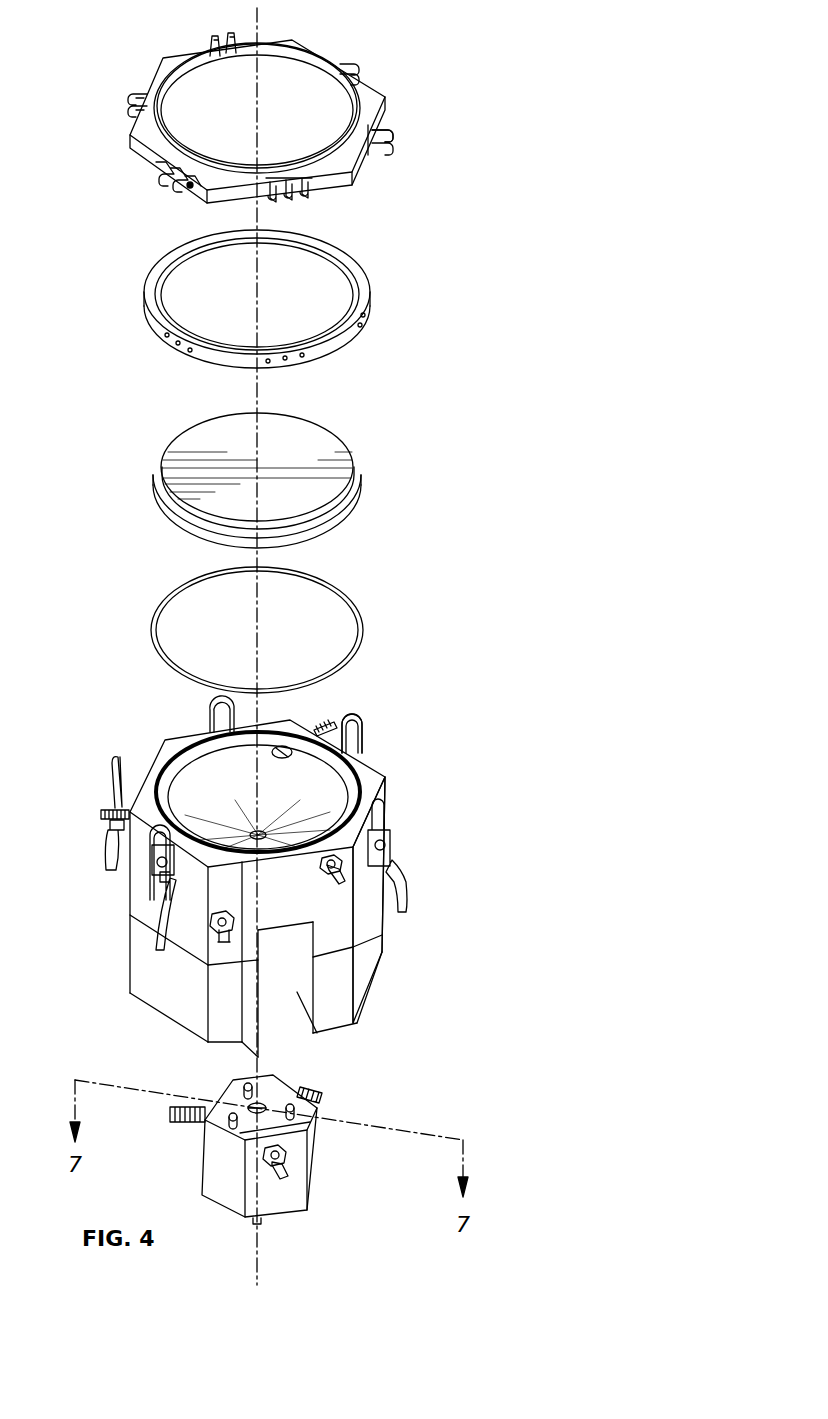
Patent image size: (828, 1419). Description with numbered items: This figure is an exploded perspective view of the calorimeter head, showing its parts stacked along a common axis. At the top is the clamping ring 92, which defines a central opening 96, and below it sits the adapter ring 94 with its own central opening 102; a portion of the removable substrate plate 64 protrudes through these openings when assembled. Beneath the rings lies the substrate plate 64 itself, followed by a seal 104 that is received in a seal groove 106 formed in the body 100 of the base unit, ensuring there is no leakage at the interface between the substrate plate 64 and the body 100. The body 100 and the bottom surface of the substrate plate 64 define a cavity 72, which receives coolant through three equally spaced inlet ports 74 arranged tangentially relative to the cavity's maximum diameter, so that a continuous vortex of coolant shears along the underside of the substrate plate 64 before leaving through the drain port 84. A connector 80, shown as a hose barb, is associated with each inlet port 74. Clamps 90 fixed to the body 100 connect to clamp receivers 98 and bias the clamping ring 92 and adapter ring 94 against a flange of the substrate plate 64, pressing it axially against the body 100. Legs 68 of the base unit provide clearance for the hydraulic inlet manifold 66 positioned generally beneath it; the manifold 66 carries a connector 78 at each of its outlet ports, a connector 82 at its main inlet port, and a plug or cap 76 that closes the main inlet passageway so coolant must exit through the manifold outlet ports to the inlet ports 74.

The substrate plate 64 is at (158, 466).
The hydraulic inlet manifold 66 is at (304, 1138).
The legs 68 is at (368, 955).
The cavity 72 is at (345, 721).
The inlet ports 74 is at (282, 745).
The plug or cap 76 is at (250, 1106).
The connector 78 is at (322, 1091).
The connector 80 is at (332, 722).
The connector 82 is at (266, 1219).
The drain port 84 is at (260, 831).
The clamps 90 is at (364, 740).
The clamping ring 92 is at (128, 135).
The adapter ring 94 is at (144, 288).
The central opening 96 is at (297, 90).
The clamp receivers 98 is at (396, 130).
The body 100 is at (364, 888).
The central opening 102 is at (326, 292).
The seal 104 is at (160, 597).
The seal groove 106 is at (188, 753).